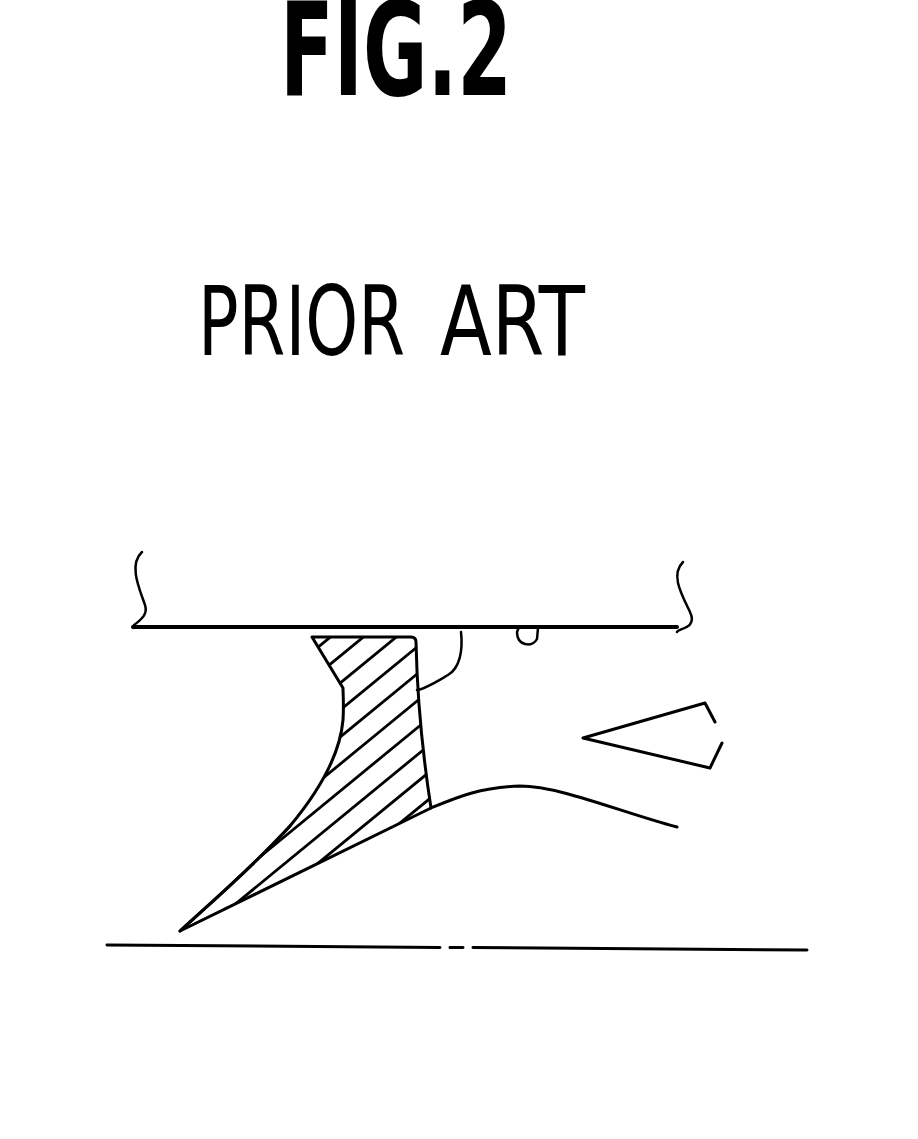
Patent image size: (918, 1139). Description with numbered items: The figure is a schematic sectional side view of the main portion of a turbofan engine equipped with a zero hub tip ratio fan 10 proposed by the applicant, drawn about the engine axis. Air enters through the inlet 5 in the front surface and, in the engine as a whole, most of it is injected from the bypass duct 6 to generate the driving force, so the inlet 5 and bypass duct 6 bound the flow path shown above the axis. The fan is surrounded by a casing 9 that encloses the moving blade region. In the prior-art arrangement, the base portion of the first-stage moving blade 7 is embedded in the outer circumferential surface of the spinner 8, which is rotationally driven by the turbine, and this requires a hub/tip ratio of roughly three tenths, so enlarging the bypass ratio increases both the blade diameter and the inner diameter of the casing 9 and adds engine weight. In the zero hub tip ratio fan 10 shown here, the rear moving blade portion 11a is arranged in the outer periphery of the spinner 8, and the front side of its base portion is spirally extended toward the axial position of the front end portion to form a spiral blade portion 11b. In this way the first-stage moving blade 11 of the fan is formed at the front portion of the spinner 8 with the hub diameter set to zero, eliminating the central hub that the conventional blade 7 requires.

The inlet 5 is at (140, 740).
The bypass duct 6 is at (630, 672).
The first-stage moving blade 7 is at (558, 824).
The spinner 8 is at (360, 897).
The casing 9 is at (538, 628).
The zero hub tip ratio fan 10 is at (287, 698).
The first-stage moving blade 11 is at (383, 632).
The rear moving blade portion 11a is at (461, 632).
The spiral blade portion 11b is at (273, 846).